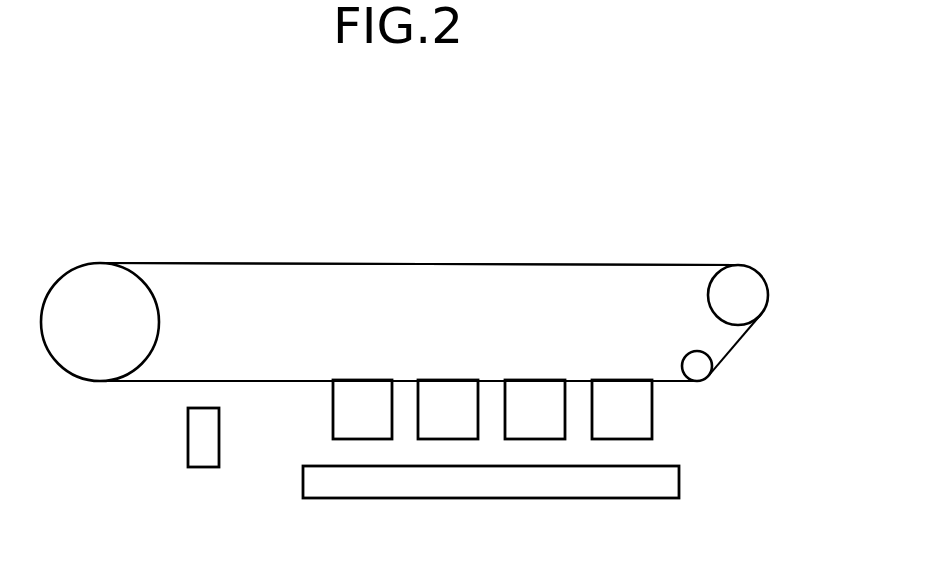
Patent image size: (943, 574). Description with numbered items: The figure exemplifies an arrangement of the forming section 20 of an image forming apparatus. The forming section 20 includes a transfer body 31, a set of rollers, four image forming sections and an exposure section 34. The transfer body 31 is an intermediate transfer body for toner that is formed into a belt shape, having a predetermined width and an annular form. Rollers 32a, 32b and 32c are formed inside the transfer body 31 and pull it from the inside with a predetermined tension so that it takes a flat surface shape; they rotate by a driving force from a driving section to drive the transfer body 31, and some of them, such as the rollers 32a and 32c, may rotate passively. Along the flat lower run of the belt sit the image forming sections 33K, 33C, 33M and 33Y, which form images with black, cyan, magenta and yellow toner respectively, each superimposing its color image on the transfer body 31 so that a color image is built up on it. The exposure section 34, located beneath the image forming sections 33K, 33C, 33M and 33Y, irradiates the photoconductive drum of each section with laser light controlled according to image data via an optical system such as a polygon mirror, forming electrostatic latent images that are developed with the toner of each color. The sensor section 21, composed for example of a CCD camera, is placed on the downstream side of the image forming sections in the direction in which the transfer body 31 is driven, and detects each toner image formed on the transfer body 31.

The forming section 20 is at (425, 189).
The sensor section 21 is at (198, 473).
The transfer body 31 is at (276, 262).
The roller 32a is at (72, 283).
The roller 32b is at (752, 287).
The roller 32c is at (698, 373).
The image forming section 33K is at (364, 378).
The image forming section 33C is at (452, 378).
The image forming section 33M is at (537, 378).
The image forming section 33Y is at (623, 378).
The exposure section 34 is at (397, 500).